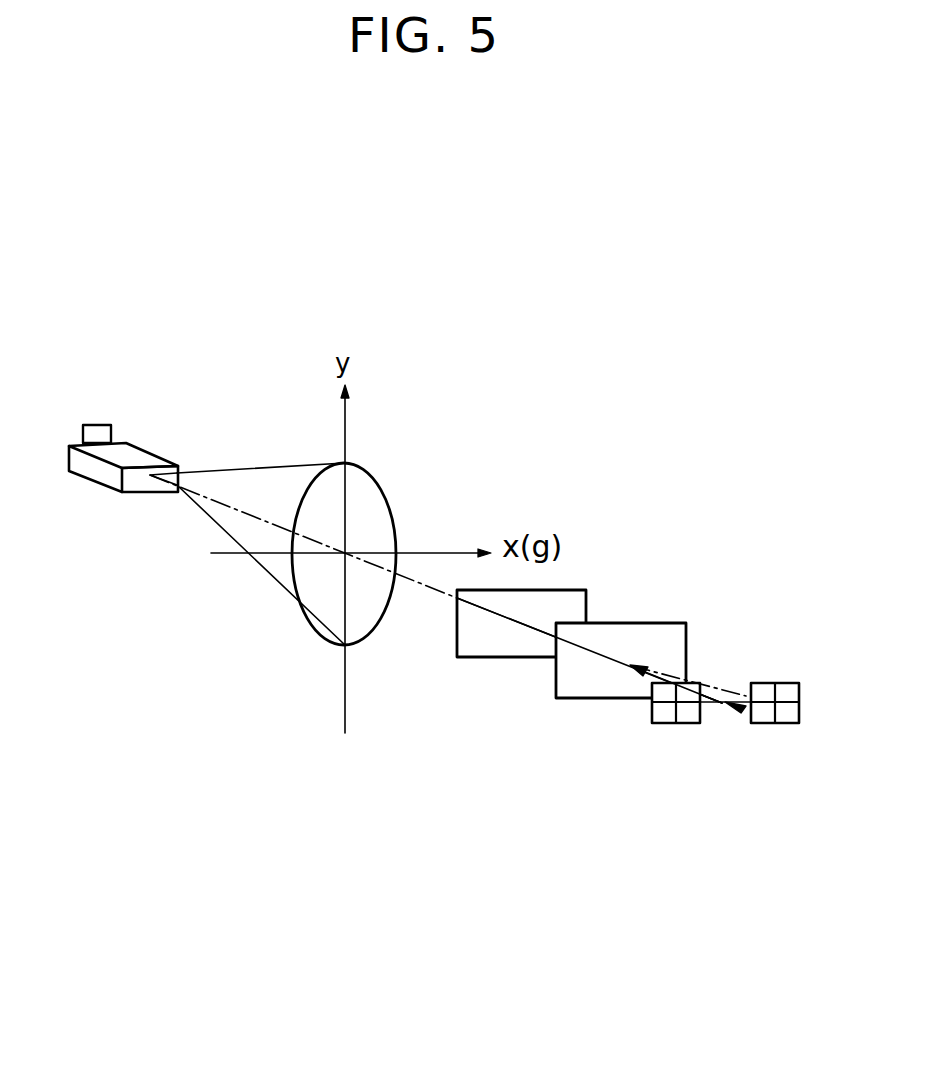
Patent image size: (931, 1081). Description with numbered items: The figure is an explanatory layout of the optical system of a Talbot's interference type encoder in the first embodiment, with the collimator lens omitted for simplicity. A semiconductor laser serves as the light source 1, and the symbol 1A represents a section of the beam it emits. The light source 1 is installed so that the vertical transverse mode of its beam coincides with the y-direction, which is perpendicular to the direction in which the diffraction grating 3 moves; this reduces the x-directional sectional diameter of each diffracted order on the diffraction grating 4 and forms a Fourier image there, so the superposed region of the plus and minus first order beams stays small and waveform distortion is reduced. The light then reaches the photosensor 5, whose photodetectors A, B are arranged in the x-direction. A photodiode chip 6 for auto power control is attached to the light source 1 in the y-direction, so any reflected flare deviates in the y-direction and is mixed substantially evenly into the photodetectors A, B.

The light source 1 is at (137, 455).
The section of a beam 1A is at (383, 490).
The diffraction grating 3 is at (563, 590).
The diffraction grating 4 is at (663, 622).
The photosensor 5 is at (730, 784).
The photodiode chip 6 is at (96, 428).
The photodetector A is at (685, 725).
The photodetector B is at (779, 753).